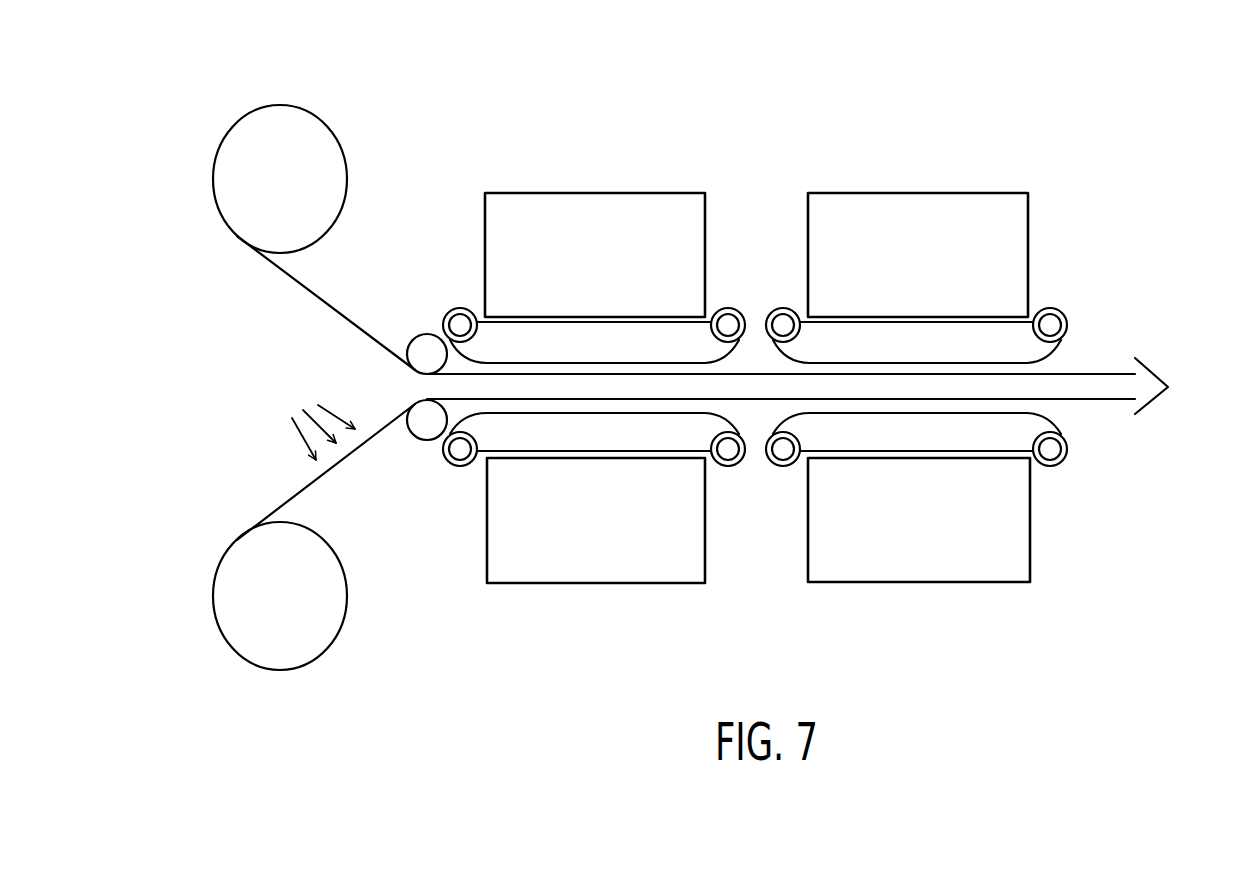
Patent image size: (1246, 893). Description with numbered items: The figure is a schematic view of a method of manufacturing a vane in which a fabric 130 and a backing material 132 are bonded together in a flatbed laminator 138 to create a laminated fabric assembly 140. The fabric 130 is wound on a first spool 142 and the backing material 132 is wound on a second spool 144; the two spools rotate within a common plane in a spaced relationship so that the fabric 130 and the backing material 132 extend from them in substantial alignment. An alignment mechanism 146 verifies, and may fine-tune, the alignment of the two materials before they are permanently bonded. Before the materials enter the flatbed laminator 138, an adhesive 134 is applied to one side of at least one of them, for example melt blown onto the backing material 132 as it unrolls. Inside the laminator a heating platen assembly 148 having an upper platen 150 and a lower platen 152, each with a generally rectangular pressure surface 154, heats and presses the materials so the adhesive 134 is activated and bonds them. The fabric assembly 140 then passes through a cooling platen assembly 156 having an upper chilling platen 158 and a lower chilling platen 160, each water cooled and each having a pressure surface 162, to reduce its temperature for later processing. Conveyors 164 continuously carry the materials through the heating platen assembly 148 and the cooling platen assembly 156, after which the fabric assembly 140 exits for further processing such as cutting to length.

The flatbed laminator 138 is at (930, 85).
The first spool 142 is at (300, 132).
The second spool 144 is at (300, 648).
The fabric 130 is at (323, 296).
The backing material 132 is at (360, 462).
The adhesive 134 is at (338, 408).
The alignment mechanism 146 is at (424, 444).
The laminated fabric assembly 140 is at (1076, 333).
The heating platen assembly 148 is at (596, 562).
The upper platen 150 is at (616, 271).
The lower platen 152 is at (613, 531).
The pressure surface 154 is at (660, 316).
The cooling platen assembly 156 is at (926, 562).
The upper chilling platen 158 is at (935, 271).
The lower chilling platen 160 is at (933, 530).
The pressure surface 162 is at (998, 317).
The conveyors 164 is at (745, 353).